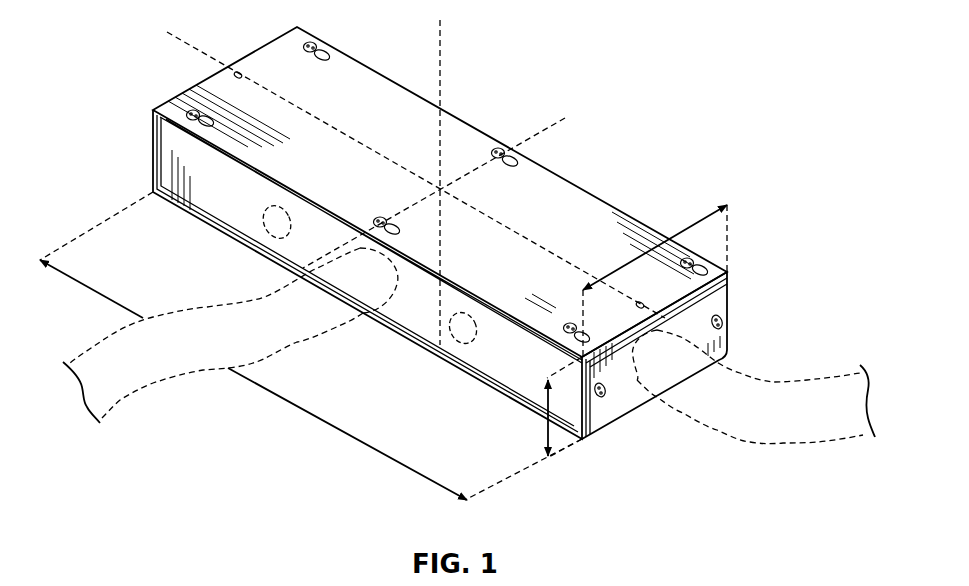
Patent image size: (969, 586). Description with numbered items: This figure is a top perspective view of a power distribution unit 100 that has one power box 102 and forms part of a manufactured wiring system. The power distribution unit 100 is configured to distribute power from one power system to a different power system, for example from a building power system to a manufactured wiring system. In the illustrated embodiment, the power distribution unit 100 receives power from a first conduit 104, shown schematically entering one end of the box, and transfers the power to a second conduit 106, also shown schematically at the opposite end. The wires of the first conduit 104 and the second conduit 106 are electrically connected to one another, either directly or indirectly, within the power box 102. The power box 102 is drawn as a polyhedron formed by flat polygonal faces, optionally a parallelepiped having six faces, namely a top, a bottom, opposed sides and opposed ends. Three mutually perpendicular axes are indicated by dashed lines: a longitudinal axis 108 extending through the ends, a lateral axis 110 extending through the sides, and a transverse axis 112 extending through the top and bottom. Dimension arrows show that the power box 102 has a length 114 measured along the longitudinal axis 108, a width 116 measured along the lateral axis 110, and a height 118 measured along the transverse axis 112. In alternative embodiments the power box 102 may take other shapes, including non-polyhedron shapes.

The power distribution unit 100 is at (650, 56).
The power box 102 is at (567, 187).
The first conduit 104 is at (300, 342).
The second conduit 106 is at (793, 430).
The longitudinal axis 108 is at (183, 43).
The lateral axis 110 is at (548, 127).
The transverse axis 112 is at (442, 54).
The length 114 is at (333, 430).
The width 116 is at (697, 222).
The height 118 is at (547, 433).